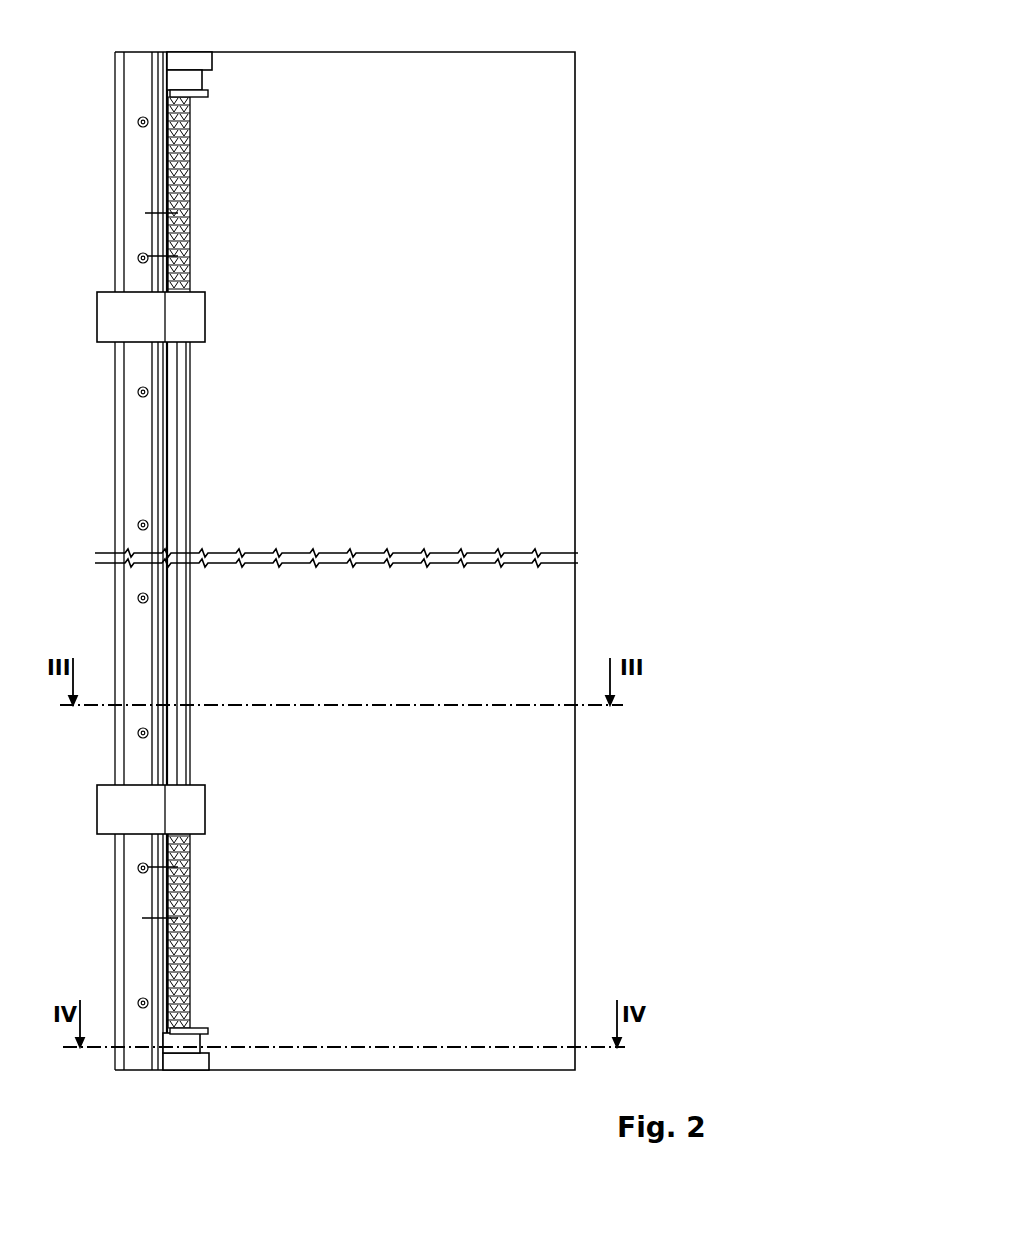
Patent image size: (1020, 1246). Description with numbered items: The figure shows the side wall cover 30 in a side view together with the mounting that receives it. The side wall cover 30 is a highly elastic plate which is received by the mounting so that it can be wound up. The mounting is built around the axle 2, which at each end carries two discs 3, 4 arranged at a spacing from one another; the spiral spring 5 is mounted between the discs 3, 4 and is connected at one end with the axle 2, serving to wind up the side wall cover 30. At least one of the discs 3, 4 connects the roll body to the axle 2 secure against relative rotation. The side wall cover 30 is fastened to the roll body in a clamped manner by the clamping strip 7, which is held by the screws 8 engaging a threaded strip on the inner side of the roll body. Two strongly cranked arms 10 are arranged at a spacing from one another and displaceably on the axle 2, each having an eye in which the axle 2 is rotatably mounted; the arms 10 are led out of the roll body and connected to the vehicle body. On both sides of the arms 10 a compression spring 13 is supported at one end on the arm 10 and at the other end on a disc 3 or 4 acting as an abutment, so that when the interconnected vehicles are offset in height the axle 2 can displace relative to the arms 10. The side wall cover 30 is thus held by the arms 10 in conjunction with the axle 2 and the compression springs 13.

The axle 2 is at (173, 456).
The disc 3 is at (196, 58).
The disc 4 is at (205, 93).
The spiral spring 5 is at (196, 80).
The clamping strip 7 is at (178, 213).
The screws 8 is at (178, 256).
The arm 10 is at (190, 320).
The compression spring 13 is at (187, 160).
The side wall cover 30 is at (550, 121).